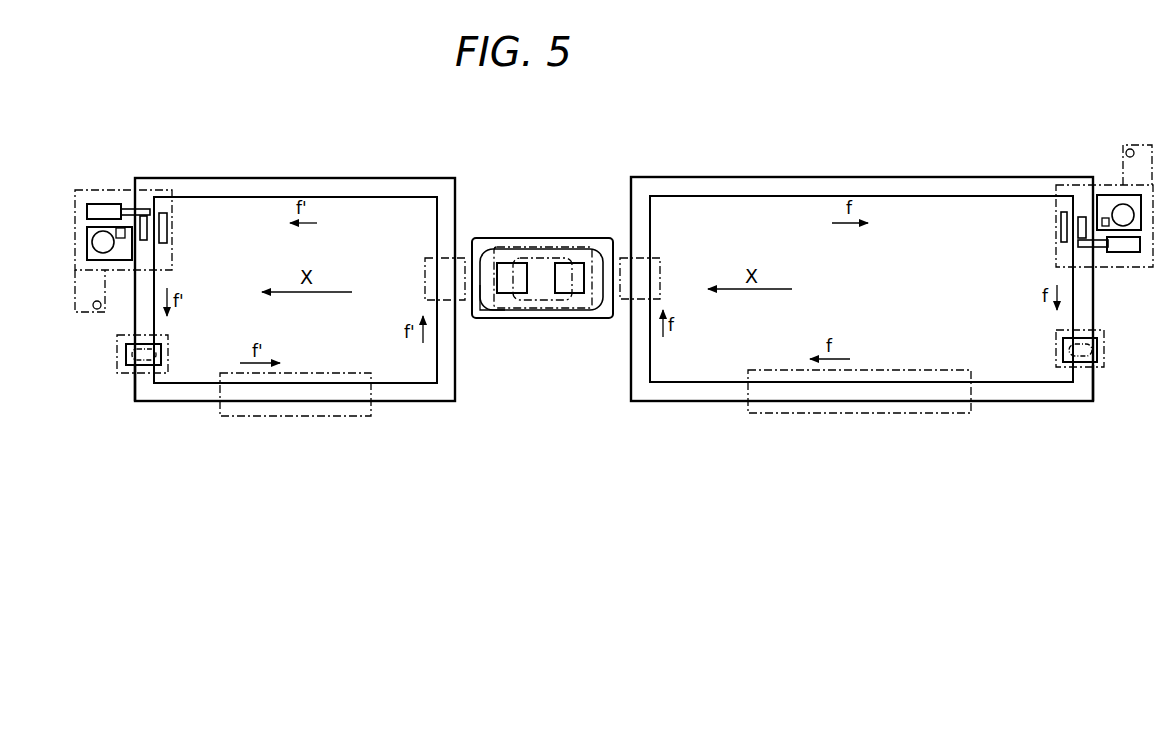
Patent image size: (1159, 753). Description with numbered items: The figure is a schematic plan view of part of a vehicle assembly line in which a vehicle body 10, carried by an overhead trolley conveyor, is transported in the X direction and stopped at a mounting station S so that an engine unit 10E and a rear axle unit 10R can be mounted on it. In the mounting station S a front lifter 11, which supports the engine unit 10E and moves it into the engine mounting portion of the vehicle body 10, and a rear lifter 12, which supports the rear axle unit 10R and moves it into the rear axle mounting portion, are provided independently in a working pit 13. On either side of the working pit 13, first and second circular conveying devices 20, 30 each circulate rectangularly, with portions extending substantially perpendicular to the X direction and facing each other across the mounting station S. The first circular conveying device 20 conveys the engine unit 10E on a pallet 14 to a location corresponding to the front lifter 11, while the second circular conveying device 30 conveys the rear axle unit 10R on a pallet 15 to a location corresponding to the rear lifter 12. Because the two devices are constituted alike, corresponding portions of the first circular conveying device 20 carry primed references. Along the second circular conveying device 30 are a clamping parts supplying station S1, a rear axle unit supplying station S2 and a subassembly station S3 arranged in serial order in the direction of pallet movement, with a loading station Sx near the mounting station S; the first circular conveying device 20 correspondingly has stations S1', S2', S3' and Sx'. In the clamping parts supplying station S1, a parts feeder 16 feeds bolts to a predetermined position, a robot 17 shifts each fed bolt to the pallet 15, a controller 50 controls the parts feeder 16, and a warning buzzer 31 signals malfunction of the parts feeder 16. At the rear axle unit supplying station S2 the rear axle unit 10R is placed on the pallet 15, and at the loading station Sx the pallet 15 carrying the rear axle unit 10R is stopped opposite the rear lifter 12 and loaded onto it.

The vehicle body 10 is at (545, 246).
The front lifter 11 is at (506, 266).
The rear lifter 12 is at (578, 293).
The working pit 13 is at (496, 312).
The pallet 14 is at (126, 357).
The pallet 15 is at (1098, 345).
The parts feeder 16 is at (100, 243).
The robot 17 is at (113, 204).
The first circular conveying device 20 is at (200, 192).
The second circular conveying device 30 is at (862, 192).
The warning buzzer 31 is at (98, 312).
The controller 50 is at (165, 235).
The engine unit 10E is at (131, 366).
The rear axle unit 10R is at (1102, 361).
The mounting station S is at (532, 186).
The clamping parts supplying station S1 is at (1075, 226).
The rear axle unit supplying station S2 is at (1060, 345).
The subassembly station S3 is at (859, 414).
The loading station Sx is at (660, 266).
The clamping parts supplying station S1' is at (153, 230).
The engine unit supplying station S2' is at (163, 347).
The subassembly station S3' is at (295, 413).
The loading station Sx' is at (428, 266).